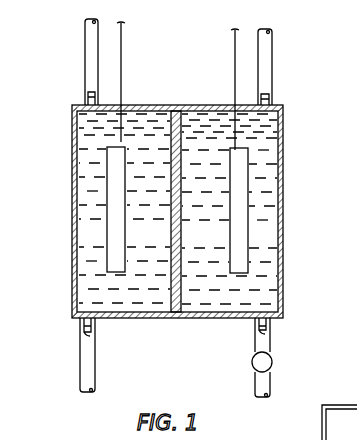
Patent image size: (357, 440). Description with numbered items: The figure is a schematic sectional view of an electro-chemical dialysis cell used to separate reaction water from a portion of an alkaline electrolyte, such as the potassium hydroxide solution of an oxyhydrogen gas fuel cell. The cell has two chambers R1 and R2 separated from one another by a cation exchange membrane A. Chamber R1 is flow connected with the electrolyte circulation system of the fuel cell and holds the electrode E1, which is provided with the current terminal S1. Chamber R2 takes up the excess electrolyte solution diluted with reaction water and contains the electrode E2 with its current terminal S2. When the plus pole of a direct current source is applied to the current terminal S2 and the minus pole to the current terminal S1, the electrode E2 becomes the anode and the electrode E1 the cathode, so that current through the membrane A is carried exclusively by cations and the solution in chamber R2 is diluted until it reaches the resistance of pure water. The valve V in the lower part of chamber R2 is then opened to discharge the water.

The cation exchange membrane A is at (180, 107).
The chamber R1 is at (78, 138).
The chamber R2 is at (272, 139).
The electrode E1 is at (110, 228).
The electrode E2 is at (245, 231).
The current terminal S1 is at (121, 38).
The current terminal S2 is at (235, 44).
The valve V is at (272, 360).